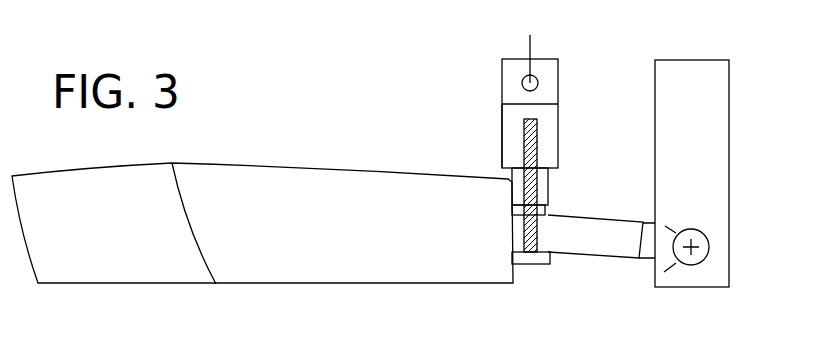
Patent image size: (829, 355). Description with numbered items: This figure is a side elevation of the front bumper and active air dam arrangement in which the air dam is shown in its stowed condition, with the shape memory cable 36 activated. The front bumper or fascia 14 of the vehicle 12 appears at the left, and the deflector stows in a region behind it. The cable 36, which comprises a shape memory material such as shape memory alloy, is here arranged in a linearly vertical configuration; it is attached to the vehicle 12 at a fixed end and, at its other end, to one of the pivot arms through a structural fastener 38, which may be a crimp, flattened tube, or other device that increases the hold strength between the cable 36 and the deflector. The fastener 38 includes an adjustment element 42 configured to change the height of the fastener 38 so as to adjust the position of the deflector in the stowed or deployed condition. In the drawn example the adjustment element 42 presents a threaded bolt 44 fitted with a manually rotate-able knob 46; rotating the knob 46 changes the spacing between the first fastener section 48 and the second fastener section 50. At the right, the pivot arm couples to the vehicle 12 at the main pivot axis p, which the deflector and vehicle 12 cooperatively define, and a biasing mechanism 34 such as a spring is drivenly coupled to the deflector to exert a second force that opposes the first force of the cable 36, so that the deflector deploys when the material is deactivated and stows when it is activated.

The vehicle 12 is at (705, 152).
The front bumper or fascia 14 is at (268, 248).
The biasing mechanism 34 is at (676, 233).
The cable 36 is at (532, 43).
The structural fastener 38 is at (482, 68).
The adjustment element 42 is at (536, 295).
The threaded bolt 44 is at (537, 141).
The manually rotate-able knob 46 is at (550, 263).
The first fastener section 48 is at (502, 139).
The second fastener section 50 is at (548, 192).
The main pivot axis p is at (709, 243).